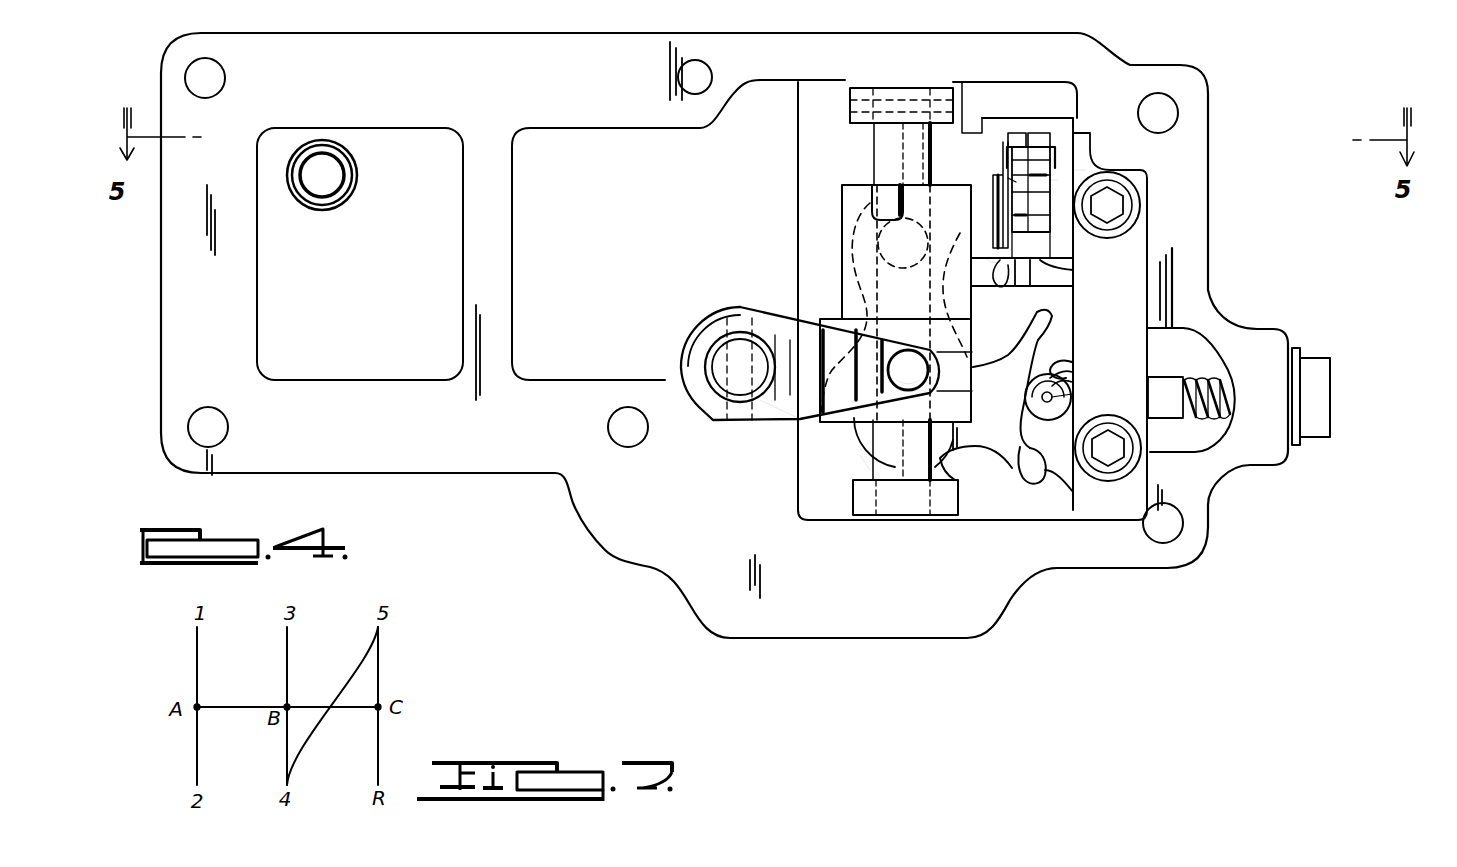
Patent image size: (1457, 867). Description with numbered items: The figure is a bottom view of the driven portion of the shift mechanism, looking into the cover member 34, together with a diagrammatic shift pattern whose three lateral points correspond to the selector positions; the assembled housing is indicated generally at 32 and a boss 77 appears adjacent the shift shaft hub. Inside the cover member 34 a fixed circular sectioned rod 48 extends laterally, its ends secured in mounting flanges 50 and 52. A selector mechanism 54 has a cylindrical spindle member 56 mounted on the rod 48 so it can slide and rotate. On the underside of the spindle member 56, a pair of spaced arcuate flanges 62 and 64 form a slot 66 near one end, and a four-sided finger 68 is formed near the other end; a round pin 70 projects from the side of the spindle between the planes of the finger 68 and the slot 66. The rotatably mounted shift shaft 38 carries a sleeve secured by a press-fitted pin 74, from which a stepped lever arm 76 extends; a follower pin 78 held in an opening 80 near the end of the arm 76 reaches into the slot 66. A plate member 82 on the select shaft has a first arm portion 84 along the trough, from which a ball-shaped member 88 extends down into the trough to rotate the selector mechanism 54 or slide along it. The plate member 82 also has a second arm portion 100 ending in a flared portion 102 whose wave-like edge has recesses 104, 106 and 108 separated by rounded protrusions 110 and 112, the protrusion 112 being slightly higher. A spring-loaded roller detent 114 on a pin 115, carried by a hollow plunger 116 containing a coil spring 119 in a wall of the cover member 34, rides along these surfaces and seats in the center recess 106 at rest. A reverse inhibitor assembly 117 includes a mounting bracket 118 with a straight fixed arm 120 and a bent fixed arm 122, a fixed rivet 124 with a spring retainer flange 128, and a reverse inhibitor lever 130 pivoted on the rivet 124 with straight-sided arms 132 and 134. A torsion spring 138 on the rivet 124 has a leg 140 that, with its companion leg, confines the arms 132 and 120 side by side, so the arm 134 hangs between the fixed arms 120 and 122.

The mounting plate 32 is at (1239, 110).
The cover member 34 is at (378, 428).
The shift shaft 38 is at (681, 364).
The fixed circular sectioned rod 48 is at (846, 473).
The mounting flange 50 is at (850, 508).
The mounting flange 52 is at (850, 102).
The selector mechanism 54 is at (828, 210).
The spindle member 56 is at (850, 292).
The arcuate-shaped flange 62 is at (948, 425).
The arcuate-shaped flange 64 is at (972, 325).
The slot 66 is at (975, 374).
The four-sided finger 68 is at (868, 203).
The round pin 70 is at (982, 256).
The press-fitted pin 74 is at (705, 418).
The stepped lever arm 76 is at (792, 423).
The hub boss 77 is at (697, 327).
The follower pin 78 is at (905, 392).
The opening 80 is at (908, 350).
The plate member 82 is at (862, 478).
The first arm portion 84 is at (855, 262).
The ball-shaped member 88 is at (843, 232).
The second arm portion 100 is at (940, 470).
The flared portion 102 is at (1022, 478).
The recess 104 is at (1073, 492).
The recess 106 is at (975, 450).
The recess 108 is at (1055, 330).
The rounded protrusion 110 is at (1056, 400).
The rounded protrusion 112 is at (1060, 352).
The spring-loaded roller detent 114 is at (1072, 372).
The pin 115 is at (1072, 382).
The hollow spring-loaded plunger 116 is at (1072, 394).
The reverse inhibitor assembly 117 is at (1078, 166).
The mounting bracket 118 is at (1100, 207).
The coil spring 119 is at (1212, 377).
The straight fixed arm 120 is at (1047, 133).
The bent fixed arm 122 is at (1083, 285).
The fixed rivet 124 is at (1069, 184).
The spring retainer flange 128 is at (1003, 178).
The reverse inhibitor lever 130 is at (1008, 122).
The straight-sided arm 132 is at (1019, 133).
The straight-sided arm 134 is at (1010, 182).
The torsion spring 138 is at (1010, 268).
The leg 140 is at (1056, 148).